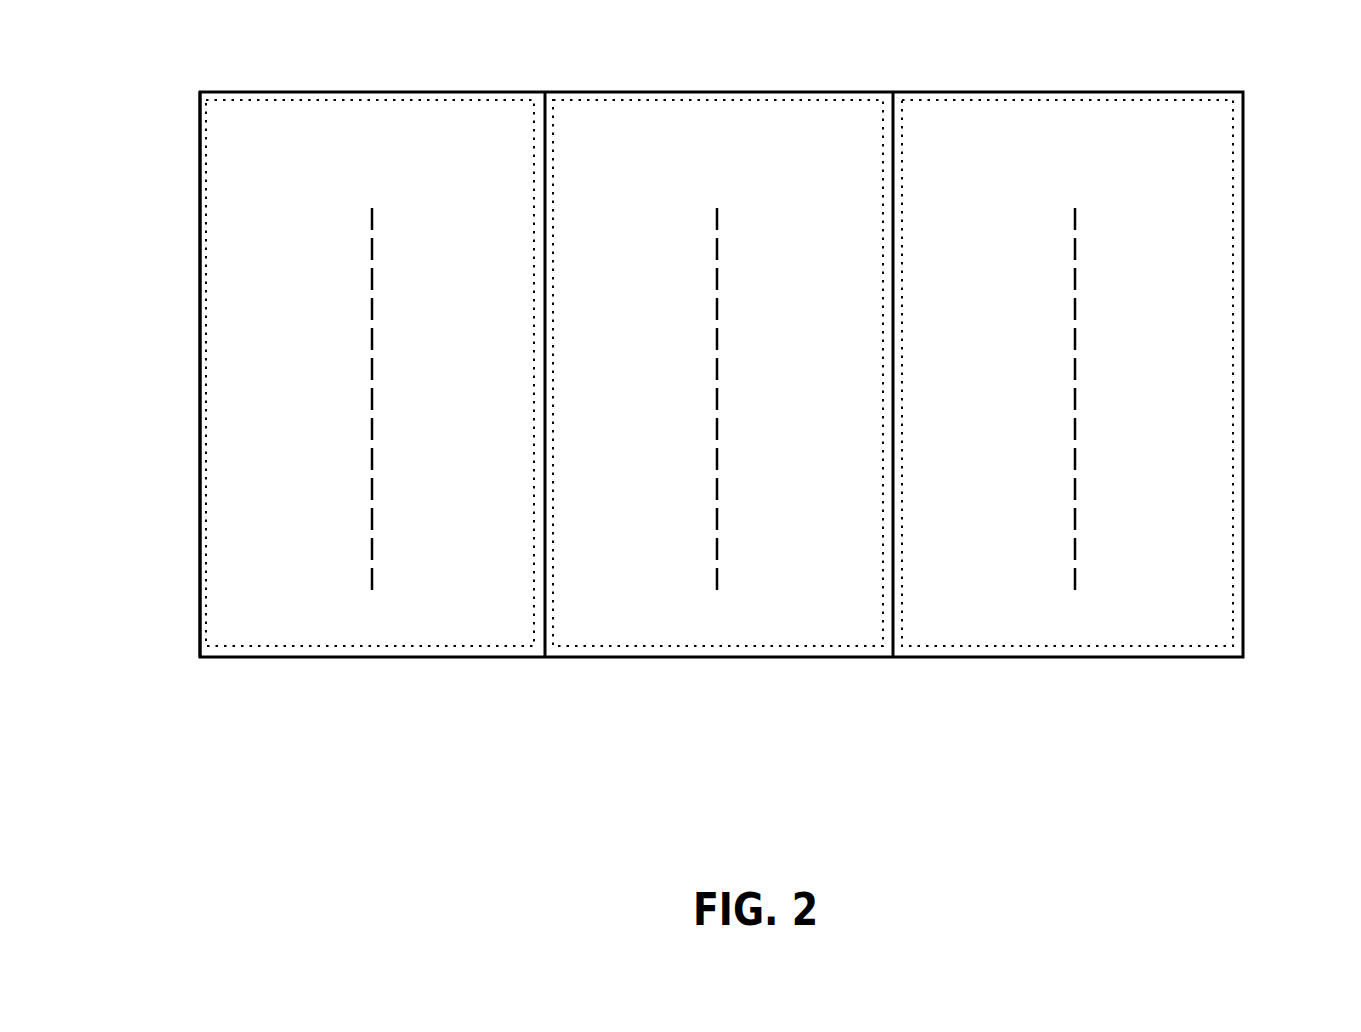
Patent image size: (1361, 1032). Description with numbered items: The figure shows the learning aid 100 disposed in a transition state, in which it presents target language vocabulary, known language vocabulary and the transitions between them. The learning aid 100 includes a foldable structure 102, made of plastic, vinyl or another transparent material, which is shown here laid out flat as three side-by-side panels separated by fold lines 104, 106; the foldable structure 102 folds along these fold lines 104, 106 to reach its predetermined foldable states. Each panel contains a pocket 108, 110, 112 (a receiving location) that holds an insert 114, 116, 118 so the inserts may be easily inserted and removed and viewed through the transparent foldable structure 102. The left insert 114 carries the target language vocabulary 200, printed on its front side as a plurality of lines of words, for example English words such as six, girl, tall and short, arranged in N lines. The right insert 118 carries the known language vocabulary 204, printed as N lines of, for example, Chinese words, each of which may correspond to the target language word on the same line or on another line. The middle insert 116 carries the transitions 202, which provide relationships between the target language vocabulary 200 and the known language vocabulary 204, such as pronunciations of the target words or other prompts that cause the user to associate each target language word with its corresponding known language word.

The learning aid 100 is at (541, 795).
The foldable structure 102 is at (198, 128).
The fold line 104 is at (545, 657).
The fold line 106 is at (893, 658).
The pocket 108 is at (405, 98).
The pocket 110 is at (733, 97).
The pocket 112 is at (1178, 95).
The insert 114 is at (324, 373).
The insert 116 is at (658, 373).
The insert 118 is at (1028, 373).
The target language vocabulary 200 is at (302, 207).
The transitions 202 is at (593, 160).
The known language vocabulary 204 is at (1135, 203).